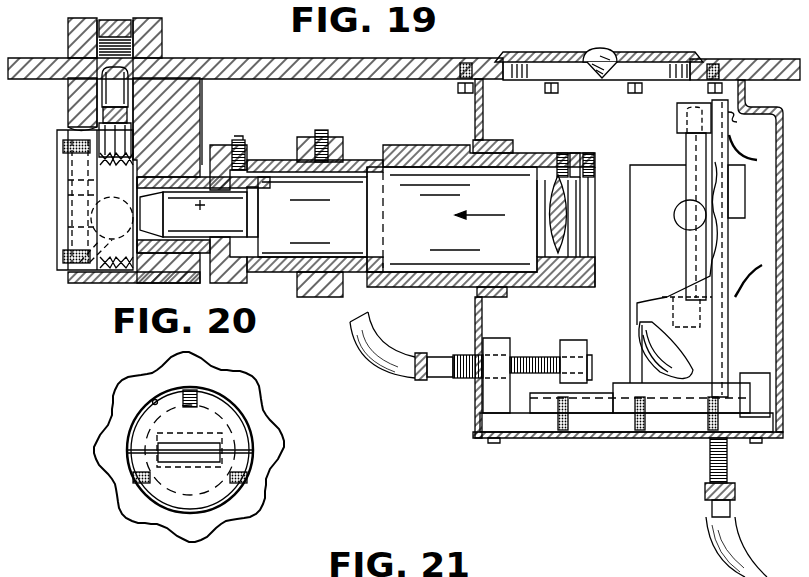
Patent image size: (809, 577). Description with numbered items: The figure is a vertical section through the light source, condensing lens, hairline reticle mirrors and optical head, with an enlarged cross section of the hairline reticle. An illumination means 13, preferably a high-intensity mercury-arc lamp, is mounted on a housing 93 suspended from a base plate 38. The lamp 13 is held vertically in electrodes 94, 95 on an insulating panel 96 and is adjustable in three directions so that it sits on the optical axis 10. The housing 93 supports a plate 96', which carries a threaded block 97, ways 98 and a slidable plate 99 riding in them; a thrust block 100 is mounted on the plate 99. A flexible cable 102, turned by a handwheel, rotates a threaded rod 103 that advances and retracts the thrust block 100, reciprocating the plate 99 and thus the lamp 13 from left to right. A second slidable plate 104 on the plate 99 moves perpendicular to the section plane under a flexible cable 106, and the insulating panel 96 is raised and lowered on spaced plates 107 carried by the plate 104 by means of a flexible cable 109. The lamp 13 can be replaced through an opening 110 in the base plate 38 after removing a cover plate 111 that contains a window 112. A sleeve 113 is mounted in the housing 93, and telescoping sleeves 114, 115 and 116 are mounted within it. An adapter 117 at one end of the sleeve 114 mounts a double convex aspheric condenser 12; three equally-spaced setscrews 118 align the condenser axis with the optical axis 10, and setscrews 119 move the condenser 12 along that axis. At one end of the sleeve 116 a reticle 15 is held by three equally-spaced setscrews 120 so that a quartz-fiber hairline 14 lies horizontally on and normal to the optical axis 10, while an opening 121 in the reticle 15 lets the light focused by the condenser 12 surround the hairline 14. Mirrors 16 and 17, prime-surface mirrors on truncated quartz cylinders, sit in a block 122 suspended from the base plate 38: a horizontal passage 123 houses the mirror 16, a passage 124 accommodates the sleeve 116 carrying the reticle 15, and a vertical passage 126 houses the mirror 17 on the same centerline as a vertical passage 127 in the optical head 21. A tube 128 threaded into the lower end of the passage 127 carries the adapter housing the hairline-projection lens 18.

In FIG. 19, the optical head 21 is at (62, 26).
In FIG. 19, the vertical passage 127 is at (103, 43).
In FIG. 19, the tube 128 is at (132, 39).
In FIG. 19, the base plate 38 is at (253, 62).
In FIG. 19, the block 122 is at (69, 97).
In FIG. 20, the block 122 is at (107, 447).
In FIG. 19, the hairline-projection lens 18 is at (72, 118).
In FIG. 19, the mirror 17 is at (65, 212).
In FIG. 19, the vertical passage 126 is at (72, 178).
In FIG. 19, the mirror 16 is at (62, 233).
In FIG. 19, the horizontal passage 123 is at (87, 278).
In FIG. 19, the setscrews 120 is at (200, 109).
In FIG. 20, the setscrews 120 is at (200, 390).
In FIG. 19, the opening 121 is at (158, 207).
In FIG. 20, the opening 121 is at (220, 447).
In FIG. 19, the passage 124 is at (206, 142).
In FIG. 20, the passage 124 is at (154, 400).
In FIG. 19, the telescoping sleeve 116 is at (222, 147).
In FIG. 19, the telescoping sleeve 115 is at (278, 161).
In FIG. 19, the hairline 14 is at (148, 218).
In FIG. 20, the hairline 14 is at (198, 462).
In FIG. 19, the reticle 15 is at (181, 229).
In FIG. 20, the reticle 15 is at (137, 418).
In FIG. 19, the telescoping sleeve 114 is at (340, 136).
In FIG. 19, the sleeve 113 is at (412, 144).
In FIG. 19, the housing 93 is at (475, 112).
In FIG. 19, the opening 110 is at (507, 83).
In FIG. 19, the window 112 is at (597, 50).
In FIG. 19, the cover plate 111 is at (647, 56).
In FIG. 19, the electrode 94 is at (677, 113).
In FIG. 19, the setscrews 118 is at (561, 153).
In FIG. 19, the adapter 117 is at (575, 160).
In FIG. 19, the setscrews 119 is at (598, 152).
In FIG. 19, the spaced plates 107 is at (700, 178).
In FIG. 19, the illumination means 13 is at (682, 208).
In FIG. 19, the optical axis 10 is at (452, 219).
In FIG. 19, the condenser 12 is at (565, 232).
In FIG. 19, the insulating panel 96 is at (741, 258).
In FIG. 19, the electrode 95 is at (665, 297).
In FIG. 19, the flexible cable 106 is at (637, 342).
In FIG. 19, the flexible cable 102 is at (393, 346).
In FIG. 19, the threaded block 97 is at (498, 340).
In FIG. 19, the thrust block 100 is at (570, 340).
In FIG. 19, the threaded rod 103 is at (465, 380).
In FIG. 19, the plate 96' is at (626, 445).
In FIG. 19, the ways 98 is at (548, 408).
In FIG. 19, the slidable plate 99 is at (602, 410).
In FIG. 19, the slidable plate 104 is at (638, 389).
In FIG. 19, the flexible cable 109 is at (715, 537).